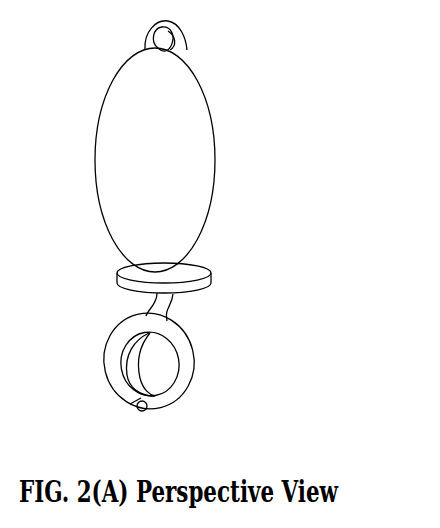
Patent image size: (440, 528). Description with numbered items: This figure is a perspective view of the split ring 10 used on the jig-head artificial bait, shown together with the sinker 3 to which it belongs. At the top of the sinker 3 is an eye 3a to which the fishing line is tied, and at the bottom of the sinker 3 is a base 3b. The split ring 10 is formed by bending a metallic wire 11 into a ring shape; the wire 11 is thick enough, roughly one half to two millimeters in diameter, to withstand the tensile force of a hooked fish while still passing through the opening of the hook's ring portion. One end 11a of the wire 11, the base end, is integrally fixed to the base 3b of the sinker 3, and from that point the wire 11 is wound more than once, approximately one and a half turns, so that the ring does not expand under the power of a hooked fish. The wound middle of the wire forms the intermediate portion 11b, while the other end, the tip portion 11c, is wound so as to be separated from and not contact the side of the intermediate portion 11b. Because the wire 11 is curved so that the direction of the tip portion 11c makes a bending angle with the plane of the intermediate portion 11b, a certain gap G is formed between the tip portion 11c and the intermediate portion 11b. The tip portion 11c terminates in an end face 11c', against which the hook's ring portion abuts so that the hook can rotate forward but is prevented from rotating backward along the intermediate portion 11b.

The sinker 3 is at (213, 117).
The eye 3a is at (177, 30).
The base 3b is at (199, 265).
The split ring 10 is at (207, 331).
The wire 11 is at (198, 360).
The one end 11a is at (175, 297).
The intermediate portion 11b is at (182, 388).
The tip portion 11c is at (128, 428).
The end face 11c' is at (170, 426).
The gap G is at (153, 408).